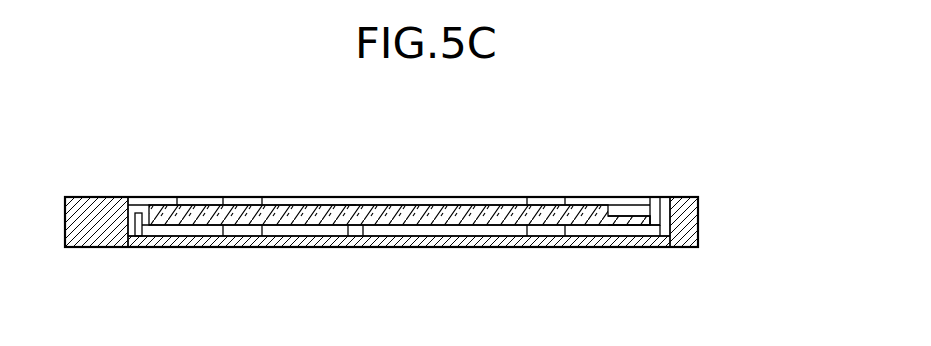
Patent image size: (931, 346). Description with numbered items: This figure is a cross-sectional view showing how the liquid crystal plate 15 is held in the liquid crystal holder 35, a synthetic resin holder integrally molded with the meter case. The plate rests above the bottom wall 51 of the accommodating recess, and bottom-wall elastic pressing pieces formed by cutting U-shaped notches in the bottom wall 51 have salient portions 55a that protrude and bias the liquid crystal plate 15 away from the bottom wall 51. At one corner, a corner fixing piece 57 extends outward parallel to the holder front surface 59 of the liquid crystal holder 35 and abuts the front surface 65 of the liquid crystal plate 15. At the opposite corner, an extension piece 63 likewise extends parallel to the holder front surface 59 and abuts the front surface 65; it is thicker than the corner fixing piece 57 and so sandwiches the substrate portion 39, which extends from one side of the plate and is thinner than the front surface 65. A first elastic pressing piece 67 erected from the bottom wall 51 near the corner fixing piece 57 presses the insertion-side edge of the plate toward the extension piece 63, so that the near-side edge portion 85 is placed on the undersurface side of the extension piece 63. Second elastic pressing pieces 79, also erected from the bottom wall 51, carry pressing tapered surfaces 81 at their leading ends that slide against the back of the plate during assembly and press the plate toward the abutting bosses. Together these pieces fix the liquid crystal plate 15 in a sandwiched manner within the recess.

The liquid crystal plate 15 is at (432, 188).
The liquid crystal holder 35 is at (703, 246).
The substrate portion 39 is at (638, 216).
The bottom wall 51 is at (306, 235).
The salient portion 55a is at (357, 236).
The corner fixing piece 57 is at (171, 197).
The holder front surface 59 is at (678, 200).
The extension piece 63 is at (650, 208).
The front surface 65 is at (348, 205).
The first elastic pressing piece 67 is at (139, 213).
The second elastic pressing piece 79 is at (240, 236).
The pressing tapered surface 81 is at (243, 197).
The near-side edge portion 85 is at (655, 222).